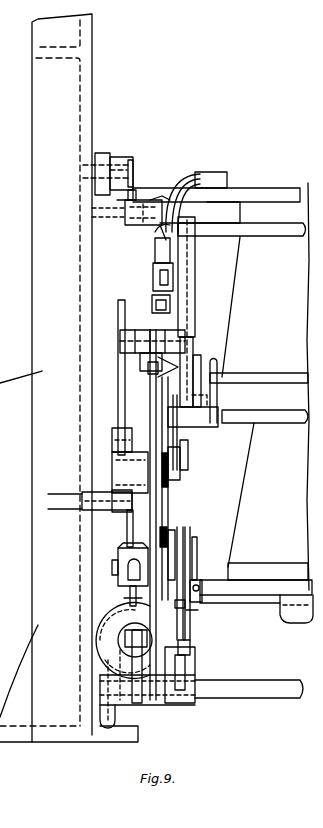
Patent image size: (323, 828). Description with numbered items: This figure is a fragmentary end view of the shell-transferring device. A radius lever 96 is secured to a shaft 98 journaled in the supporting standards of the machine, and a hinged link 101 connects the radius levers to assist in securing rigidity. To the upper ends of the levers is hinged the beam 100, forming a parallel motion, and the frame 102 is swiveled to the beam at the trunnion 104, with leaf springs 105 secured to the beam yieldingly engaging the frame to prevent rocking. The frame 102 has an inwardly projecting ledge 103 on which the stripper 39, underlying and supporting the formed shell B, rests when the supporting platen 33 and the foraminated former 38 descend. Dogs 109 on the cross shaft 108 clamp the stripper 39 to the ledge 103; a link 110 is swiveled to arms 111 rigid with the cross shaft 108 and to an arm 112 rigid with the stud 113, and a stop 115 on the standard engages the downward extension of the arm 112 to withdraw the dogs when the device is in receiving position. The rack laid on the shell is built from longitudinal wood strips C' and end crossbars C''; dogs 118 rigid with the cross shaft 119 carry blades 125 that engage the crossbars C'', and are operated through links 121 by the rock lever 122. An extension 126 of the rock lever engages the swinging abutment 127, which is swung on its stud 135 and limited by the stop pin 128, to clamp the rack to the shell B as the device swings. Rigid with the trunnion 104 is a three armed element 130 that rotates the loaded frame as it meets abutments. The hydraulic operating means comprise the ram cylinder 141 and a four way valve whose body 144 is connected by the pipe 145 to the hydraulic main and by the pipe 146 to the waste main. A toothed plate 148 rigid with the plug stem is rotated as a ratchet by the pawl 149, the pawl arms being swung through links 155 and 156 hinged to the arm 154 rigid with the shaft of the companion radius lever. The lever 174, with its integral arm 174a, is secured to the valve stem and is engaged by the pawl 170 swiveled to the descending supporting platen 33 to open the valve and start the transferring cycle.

The stud 135 is at (136, 165).
The stop pin 128 is at (134, 177).
The extension 126 is at (127, 212).
The swinging abutment 127 is at (152, 200).
The dogs 118 is at (189, 174).
The crossbars C'' is at (217, 166).
The longitudinal wood strips C' is at (208, 186).
The blade 125 is at (186, 212).
The cross shaft 119 is at (252, 229).
The formed shell B is at (265, 386).
The stripper 39 is at (280, 378).
The cross shaft 108 is at (262, 425).
The foraminated former 38 is at (255, 492).
The supporting platen 33 is at (268, 583).
The frame 102 is at (186, 309).
The links 121 is at (172, 298).
The rock lever 122 is at (158, 234).
The beam 100 is at (146, 330).
The three armed element 130 is at (118, 342).
The trunnion 104 is at (193, 338).
The leaf springs 105 is at (192, 356).
The ledge 103 is at (218, 392).
The dogs 109 is at (215, 400).
The radius lever 96 is at (153, 512).
The stud 113 is at (160, 410).
The link 110 is at (163, 440).
The arms 111 is at (176, 400).
The arm 112 is at (174, 452).
The stop 115 is at (184, 475).
The pipe 145 is at (97, 528).
The pawl 149 is at (157, 540).
The valve body 144 is at (118, 558).
The plate 148 is at (130, 595).
The cylinder 141 is at (100, 630).
The pipe 146 is at (100, 665).
The arm 174a is at (190, 545).
The lever 174 is at (196, 560).
The pawl 170 is at (202, 580).
The link 156 is at (172, 602).
The link 155 is at (190, 620).
The hinged link 101 is at (186, 640).
The arm 154 is at (196, 668).
The shaft 98 is at (203, 690).